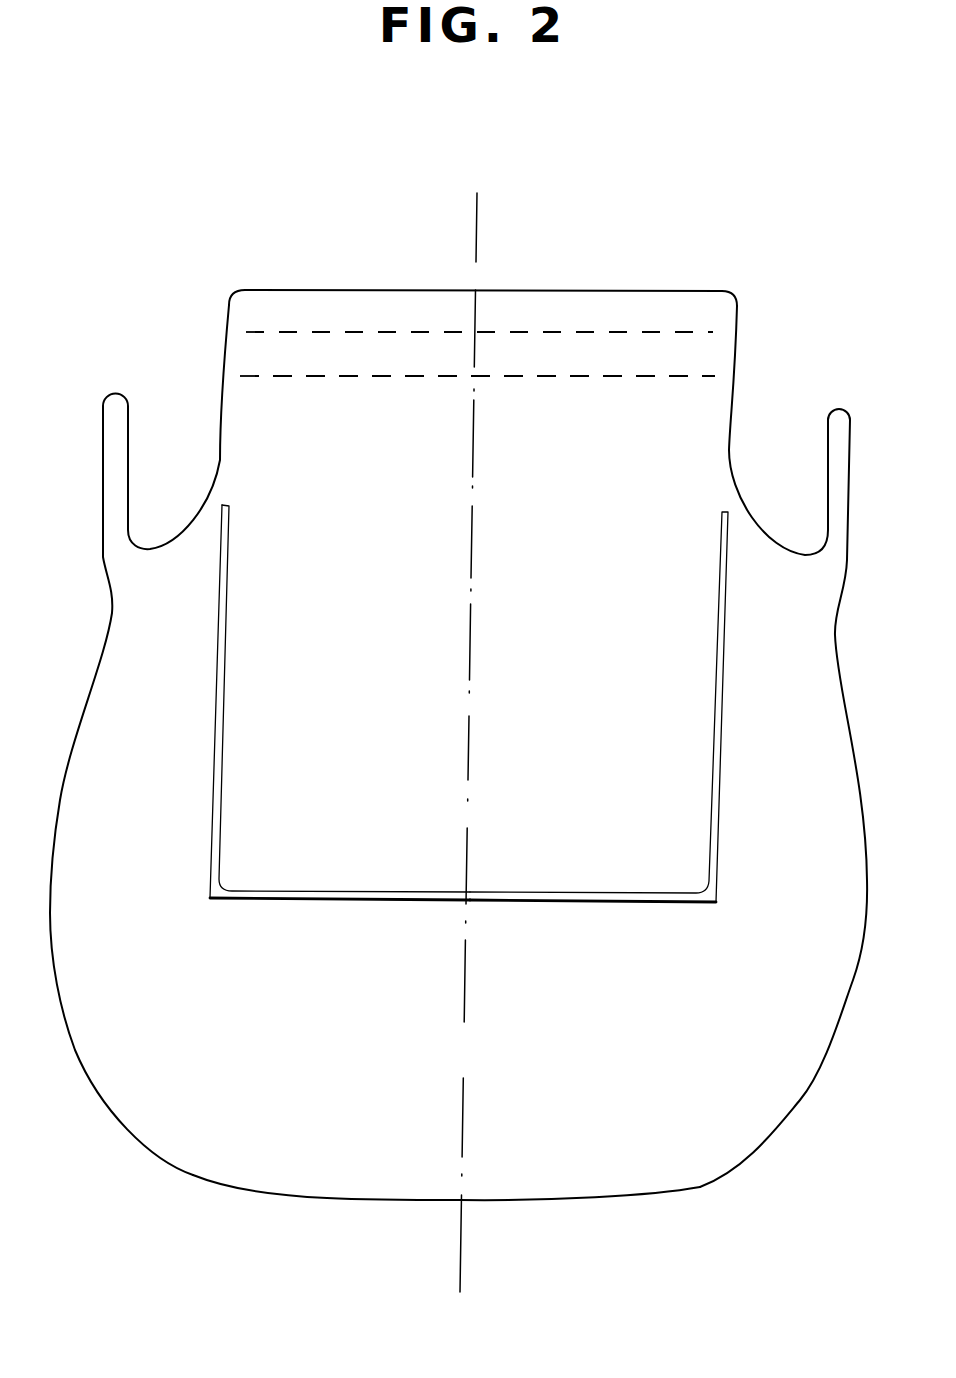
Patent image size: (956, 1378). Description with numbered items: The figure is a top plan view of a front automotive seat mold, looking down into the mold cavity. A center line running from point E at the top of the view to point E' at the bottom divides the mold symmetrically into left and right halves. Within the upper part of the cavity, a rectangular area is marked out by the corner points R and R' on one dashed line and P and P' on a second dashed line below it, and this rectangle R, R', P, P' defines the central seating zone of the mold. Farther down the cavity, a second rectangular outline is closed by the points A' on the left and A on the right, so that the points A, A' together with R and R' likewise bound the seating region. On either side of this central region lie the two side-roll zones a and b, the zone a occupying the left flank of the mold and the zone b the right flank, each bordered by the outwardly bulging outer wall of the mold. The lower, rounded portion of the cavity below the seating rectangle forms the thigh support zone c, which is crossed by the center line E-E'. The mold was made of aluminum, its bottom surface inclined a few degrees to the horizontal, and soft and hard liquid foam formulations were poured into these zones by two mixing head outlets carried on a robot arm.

The center line end point E is at (491, 607).
The center line end point E' is at (483, 1185).
The seating zone corner point R is at (595, 315).
The seating zone corner point R' is at (361, 311).
The seating zone corner point P is at (593, 360).
The seating zone corner point P' is at (355, 356).
The seating zone corner point A is at (599, 707).
The seating zone corner point A' is at (340, 702).
The side-roll zone a is at (139, 740).
The side-roll zone b is at (783, 746).
The thigh support zone c is at (446, 1118).